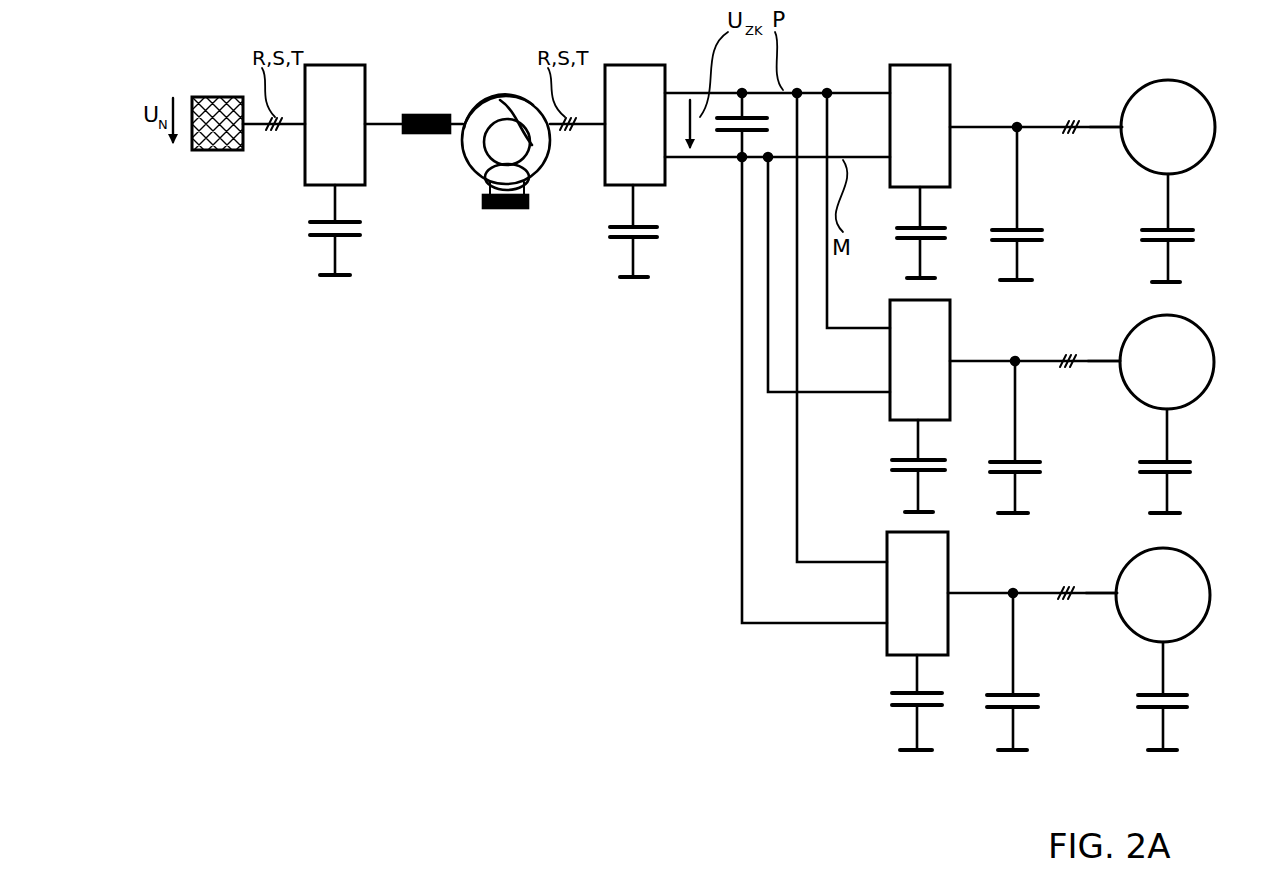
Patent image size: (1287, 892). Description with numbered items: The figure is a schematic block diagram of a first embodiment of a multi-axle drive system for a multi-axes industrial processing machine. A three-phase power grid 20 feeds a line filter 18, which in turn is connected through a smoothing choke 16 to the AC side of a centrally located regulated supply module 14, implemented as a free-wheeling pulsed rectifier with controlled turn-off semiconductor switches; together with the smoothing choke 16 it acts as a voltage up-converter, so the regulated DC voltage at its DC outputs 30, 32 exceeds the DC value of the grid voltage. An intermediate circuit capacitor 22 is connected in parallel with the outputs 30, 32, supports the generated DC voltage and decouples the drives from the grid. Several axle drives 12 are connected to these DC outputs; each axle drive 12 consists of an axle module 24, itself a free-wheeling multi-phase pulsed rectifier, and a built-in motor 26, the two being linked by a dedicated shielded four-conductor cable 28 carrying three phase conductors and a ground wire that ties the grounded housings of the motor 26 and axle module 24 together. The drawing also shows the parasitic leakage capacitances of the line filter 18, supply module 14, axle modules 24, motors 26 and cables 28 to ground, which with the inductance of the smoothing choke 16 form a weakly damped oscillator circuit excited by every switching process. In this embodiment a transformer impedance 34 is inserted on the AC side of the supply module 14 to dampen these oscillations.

The axle drive 12 is at (1040, 574).
The regulated supply module 14 is at (628, 65).
The smoothing choke 16 is at (422, 115).
The line filter 18 is at (330, 65).
The power grid 20 is at (212, 97).
The intermediate circuit capacitor 22 is at (717, 133).
The axle module 24 is at (903, 65).
The built-in motor 26 is at (1157, 80).
The four-conductor shielded cable 28 is at (1095, 130).
The DC output 30 is at (668, 90).
The DC output 32 is at (668, 163).
The transformer impedance 34 is at (500, 80).